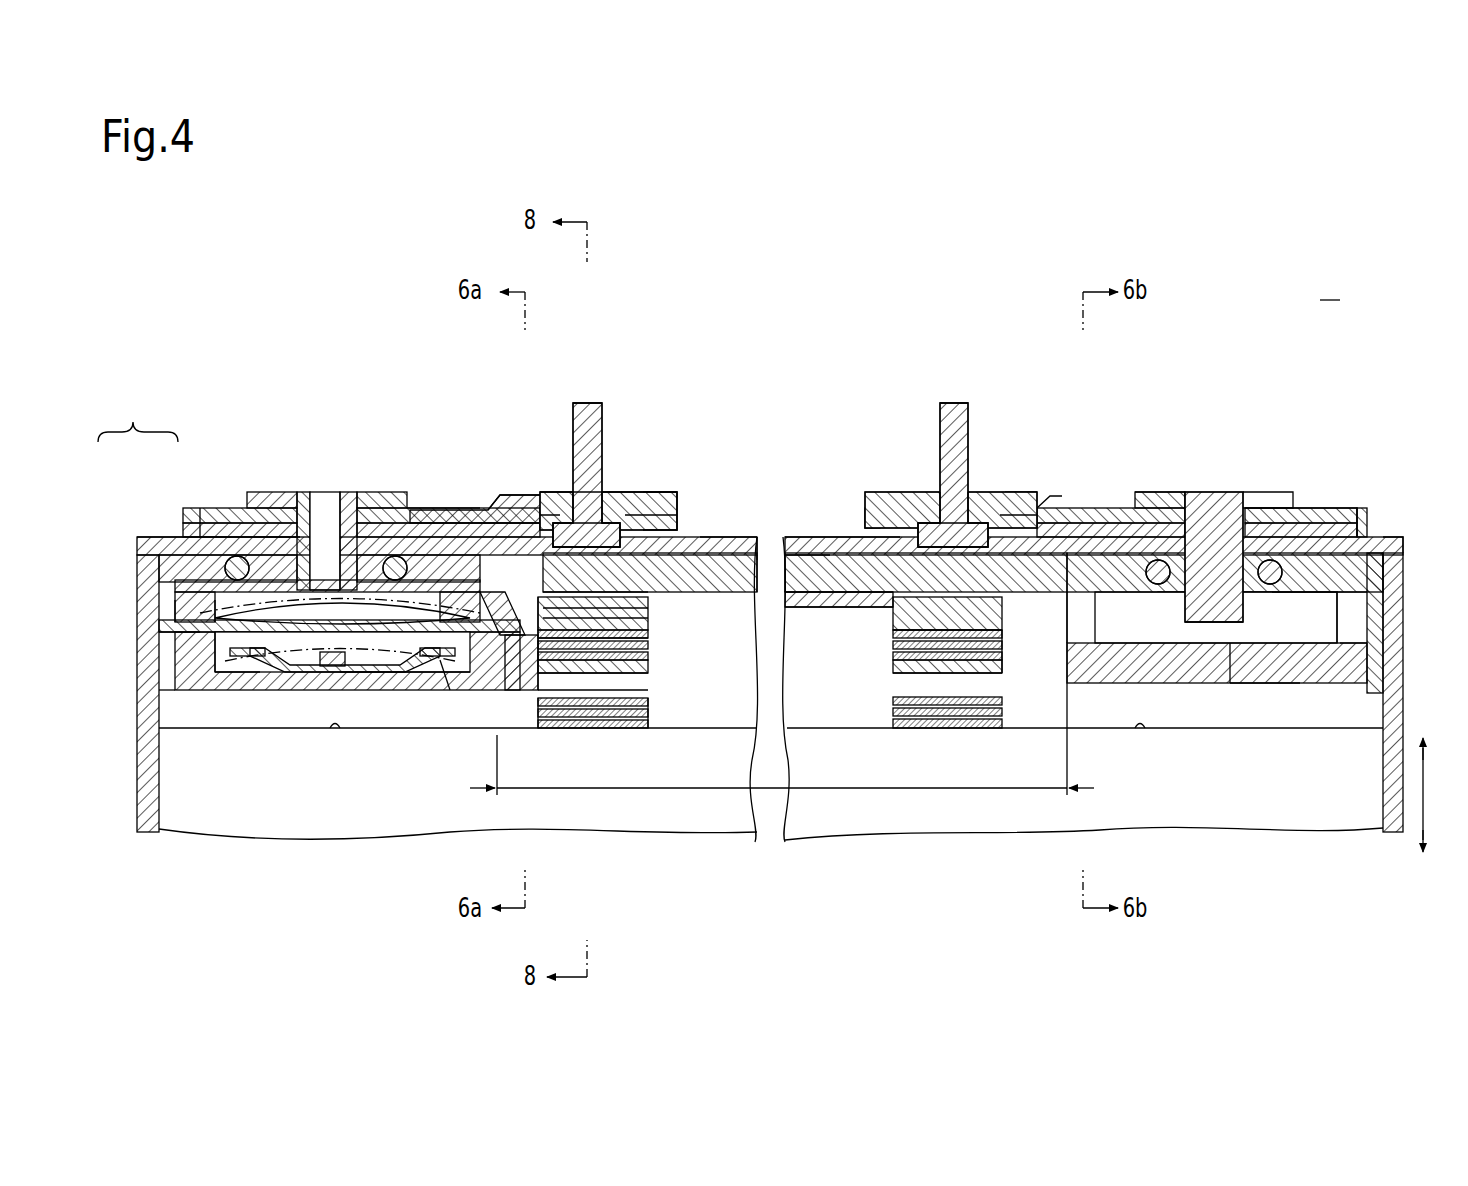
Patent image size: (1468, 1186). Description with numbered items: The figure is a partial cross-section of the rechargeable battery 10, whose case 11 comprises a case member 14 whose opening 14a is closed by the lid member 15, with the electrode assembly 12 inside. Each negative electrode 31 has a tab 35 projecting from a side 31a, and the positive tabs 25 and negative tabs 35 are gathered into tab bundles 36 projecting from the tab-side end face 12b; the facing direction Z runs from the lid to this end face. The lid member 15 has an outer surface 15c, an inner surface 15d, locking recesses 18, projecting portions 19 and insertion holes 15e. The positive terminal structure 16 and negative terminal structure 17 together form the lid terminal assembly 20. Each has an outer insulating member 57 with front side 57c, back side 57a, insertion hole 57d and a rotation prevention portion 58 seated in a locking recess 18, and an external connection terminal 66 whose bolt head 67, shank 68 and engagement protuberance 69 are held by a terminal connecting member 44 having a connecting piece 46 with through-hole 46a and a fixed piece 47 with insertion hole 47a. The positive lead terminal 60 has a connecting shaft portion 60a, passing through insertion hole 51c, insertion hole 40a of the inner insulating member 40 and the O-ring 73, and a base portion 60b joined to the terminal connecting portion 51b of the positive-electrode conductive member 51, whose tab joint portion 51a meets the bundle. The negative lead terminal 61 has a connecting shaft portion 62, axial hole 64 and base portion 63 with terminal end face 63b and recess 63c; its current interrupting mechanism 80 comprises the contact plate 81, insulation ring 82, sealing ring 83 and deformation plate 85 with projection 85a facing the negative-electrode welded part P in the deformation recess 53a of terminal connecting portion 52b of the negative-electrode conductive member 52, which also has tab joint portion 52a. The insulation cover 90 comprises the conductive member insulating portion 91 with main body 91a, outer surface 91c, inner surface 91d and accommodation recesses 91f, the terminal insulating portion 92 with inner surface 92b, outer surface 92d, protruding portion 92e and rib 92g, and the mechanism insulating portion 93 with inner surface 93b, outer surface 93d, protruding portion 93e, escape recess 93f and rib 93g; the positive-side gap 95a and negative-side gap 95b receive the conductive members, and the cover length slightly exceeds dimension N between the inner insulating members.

The rechargeable battery 10 is at (1333, 296).
The case 11 is at (138, 415).
The electrode assembly 12 is at (1178, 830).
The tab-side end face 12b is at (1140, 731).
The case member 14 is at (140, 540).
The opening 14a is at (1385, 578).
The lid member 15 is at (162, 538).
The outer surface 15c is at (723, 538).
The inner surface 15d is at (755, 555).
The insertion hole 15e is at (476, 521).
The positive terminal structure 16 is at (1156, 447).
The negative terminal structure 17 is at (493, 442).
The locking recess 18 is at (600, 597).
The projecting portion 19 is at (614, 617).
The lid terminal assembly 20 is at (1412, 532).
The tab 25 is at (1002, 656).
The negative electrode 31 is at (256, 818).
The side 31a is at (337, 732).
The tab 35 is at (620, 699).
The tab bundle 36 is at (658, 713).
The inner insulating member 40 is at (176, 545).
The insertion hole 40a is at (178, 562).
The terminal connecting member 44 is at (506, 497).
The connecting piece 46 is at (660, 495).
The through-hole 46a is at (603, 498).
The fixed piece 47 is at (430, 508).
The insertion hole 47a is at (385, 500).
The positive-electrode conductive member 51 is at (1402, 628).
The tab joint portion 51a is at (888, 618).
The terminal connecting portion 51b is at (1365, 620).
The insertion hole 51c is at (1274, 608).
The negative-electrode conductive member 52 is at (175, 630).
The tab joint portion 52a is at (642, 640).
The terminal connecting portion 52b is at (168, 650).
The deformation recess 53a is at (275, 658).
The outer insulating member 57 is at (680, 520).
The back side 57a is at (229, 512).
The front side 57c is at (199, 514).
The insertion hole 57d is at (304, 493).
The rotation prevention portion 58 is at (676, 582).
The positive lead terminal 60 is at (1263, 495).
The connecting shaft portion 60a is at (1212, 493).
The base portion 60b is at (1180, 623).
The negative lead terminal 61 is at (275, 493).
The connecting shaft portion 62 is at (349, 493).
The base portion 63 is at (180, 596).
The terminal end face 63b is at (183, 645).
The recess 63c is at (222, 652).
The axial hole 64 is at (322, 492).
The external connection terminal 66 is at (588, 402).
The bolt head 67 is at (640, 512).
The shank 68 is at (604, 424).
The engagement protuberance 69 is at (562, 537).
The O-ring 73 is at (1200, 624).
The current interrupting mechanism 80 is at (445, 665).
The contact plate 81 is at (240, 656).
The insulation ring 82 is at (465, 660).
The sealing ring 83 is at (500, 652).
The deformation plate 85 is at (372, 670).
The projection 85a is at (334, 673).
The insulation cover 90 is at (809, 545).
The conductive member insulating portion 91 is at (730, 580).
The insulating portion main body 91a is at (820, 600).
The outer surface 91c is at (828, 553).
The inner surface 91d is at (795, 594).
The accommodation recess 91f is at (610, 636).
The terminal insulating portion 92 is at (1320, 672).
The inner surface 92b is at (1232, 644).
The outer surface 92d is at (1265, 684).
The protruding portion 92e is at (1000, 643).
The rib 92g is at (1358, 655).
The mechanism insulating portion 93 is at (208, 686).
The inner surface 93b is at (420, 672).
The outer surface 93d is at (257, 700).
The protruding portion 93e is at (548, 678).
The escape recess 93f is at (356, 686).
The rib 93g is at (162, 698).
The positive-side gap 95a is at (1105, 645).
The negative-side gap 95b is at (534, 634).
The negative-electrode welded part P is at (318, 625).
The dimension N is at (992, 790).
The facing direction Z is at (1427, 782).